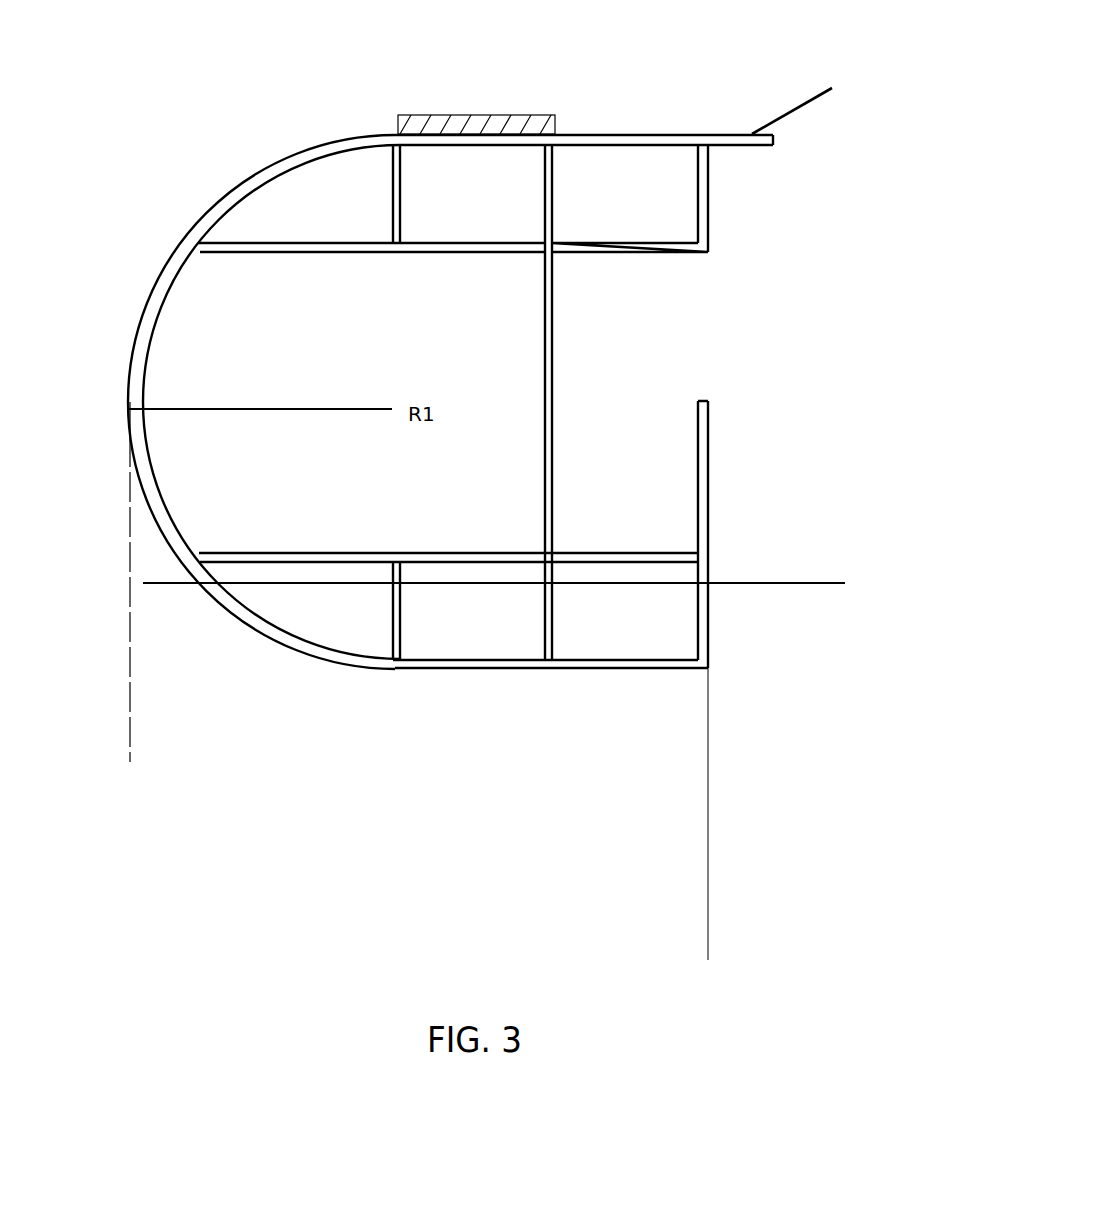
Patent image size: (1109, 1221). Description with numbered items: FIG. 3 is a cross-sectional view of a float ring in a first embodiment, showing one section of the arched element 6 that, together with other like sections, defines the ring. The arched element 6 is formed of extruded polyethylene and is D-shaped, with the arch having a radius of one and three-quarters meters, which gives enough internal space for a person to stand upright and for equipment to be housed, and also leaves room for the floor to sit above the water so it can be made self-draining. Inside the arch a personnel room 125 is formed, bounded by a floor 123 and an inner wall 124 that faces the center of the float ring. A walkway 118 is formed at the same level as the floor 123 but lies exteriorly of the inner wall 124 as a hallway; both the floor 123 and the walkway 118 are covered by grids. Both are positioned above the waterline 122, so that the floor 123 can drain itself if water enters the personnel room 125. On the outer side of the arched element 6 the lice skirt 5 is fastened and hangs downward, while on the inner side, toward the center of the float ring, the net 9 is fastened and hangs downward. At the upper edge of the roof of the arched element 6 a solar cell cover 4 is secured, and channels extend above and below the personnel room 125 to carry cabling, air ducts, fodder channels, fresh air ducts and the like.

The solar cell cover 4 is at (808, 100).
The lice skirt 5 is at (130, 695).
The arched element 6 is at (153, 318).
The net 9 is at (708, 885).
The walkway 118 is at (636, 553).
The waterline 122 is at (810, 583).
The floor 123 is at (210, 557).
The inner wall 124 is at (552, 318).
The personnel room 125 is at (227, 275).